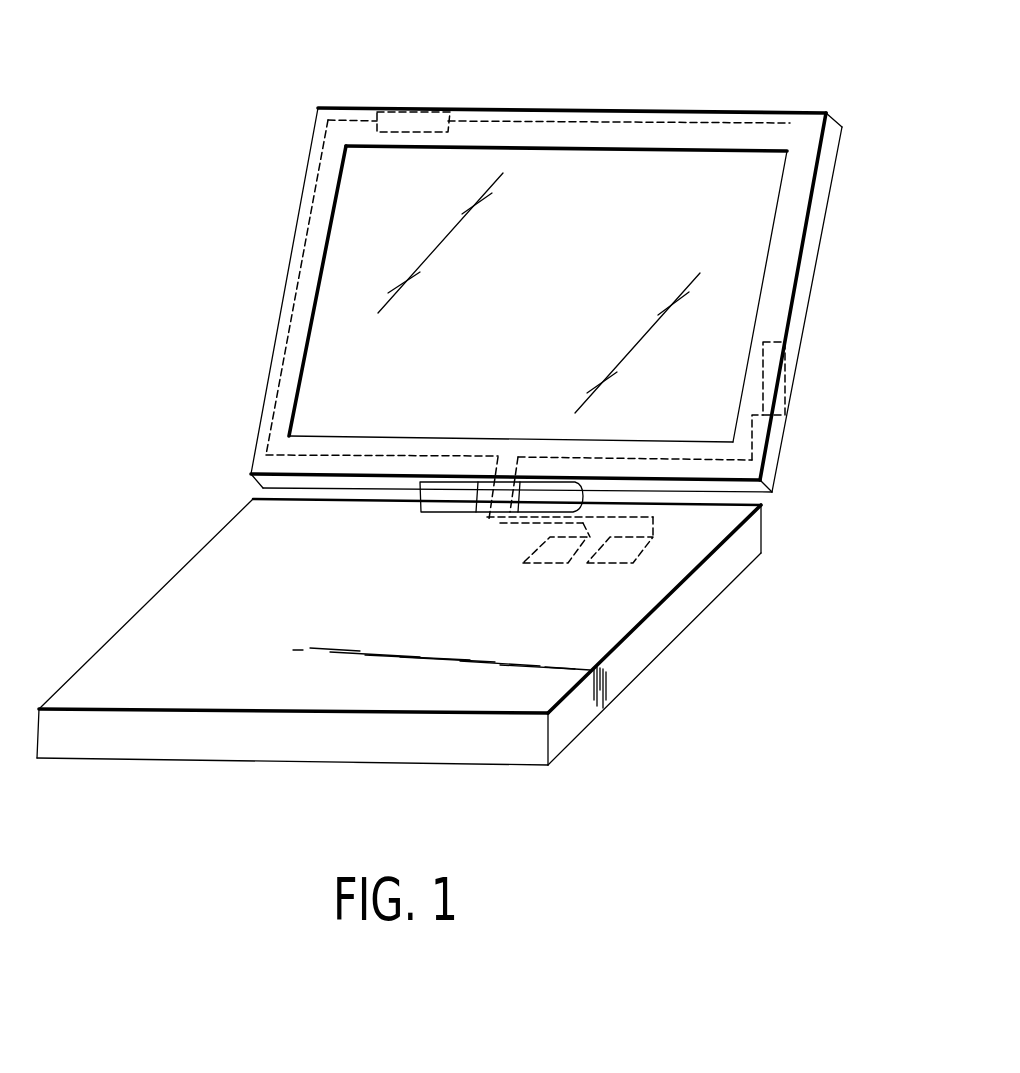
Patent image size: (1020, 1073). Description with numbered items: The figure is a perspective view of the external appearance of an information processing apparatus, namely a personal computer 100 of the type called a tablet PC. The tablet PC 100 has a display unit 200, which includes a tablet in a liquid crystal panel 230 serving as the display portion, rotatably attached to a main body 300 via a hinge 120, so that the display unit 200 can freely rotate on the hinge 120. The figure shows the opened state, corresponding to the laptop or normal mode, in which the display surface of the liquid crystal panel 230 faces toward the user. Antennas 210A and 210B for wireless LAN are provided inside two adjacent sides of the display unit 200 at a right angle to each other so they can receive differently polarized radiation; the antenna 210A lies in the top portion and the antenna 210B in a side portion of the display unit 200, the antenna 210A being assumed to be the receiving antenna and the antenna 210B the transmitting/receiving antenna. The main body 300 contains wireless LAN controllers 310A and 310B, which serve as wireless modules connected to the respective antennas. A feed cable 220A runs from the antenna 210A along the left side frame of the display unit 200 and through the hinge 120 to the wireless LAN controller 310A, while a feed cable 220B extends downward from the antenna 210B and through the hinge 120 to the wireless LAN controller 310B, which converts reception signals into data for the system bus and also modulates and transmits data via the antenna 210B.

The personal computer 100 is at (824, 99).
The display unit 200 is at (257, 278).
The antenna 210A is at (417, 122).
The antenna 210B is at (772, 352).
The feed cable 220A is at (317, 175).
The feed cable 220B is at (775, 445).
The liquid crystal panel 230 is at (757, 214).
The hinge 120 is at (502, 497).
The main body 300 is at (160, 544).
The wireless LAN controller 310A is at (565, 560).
The wireless LAN controller 310B is at (643, 550).